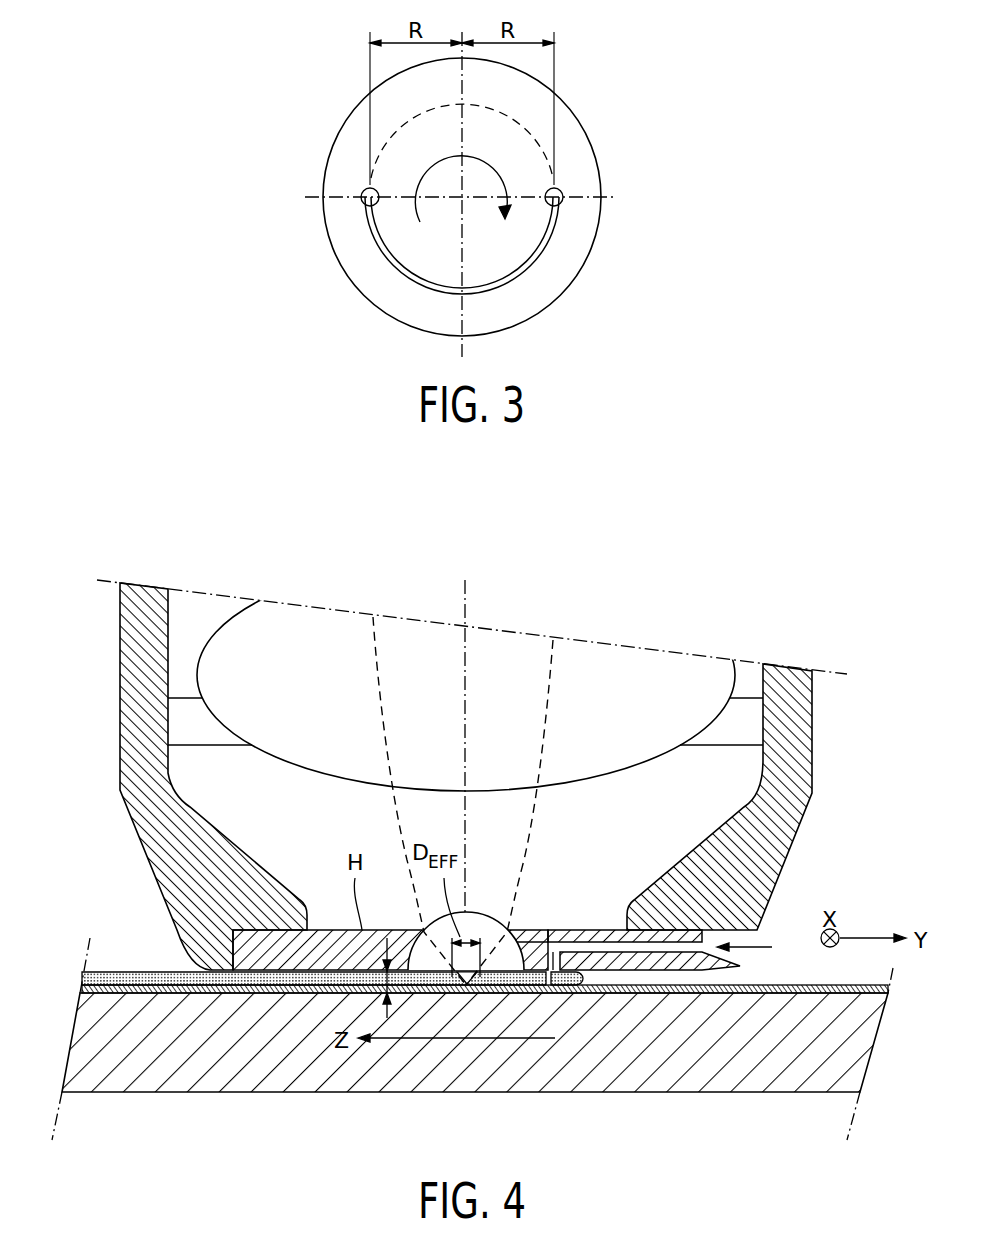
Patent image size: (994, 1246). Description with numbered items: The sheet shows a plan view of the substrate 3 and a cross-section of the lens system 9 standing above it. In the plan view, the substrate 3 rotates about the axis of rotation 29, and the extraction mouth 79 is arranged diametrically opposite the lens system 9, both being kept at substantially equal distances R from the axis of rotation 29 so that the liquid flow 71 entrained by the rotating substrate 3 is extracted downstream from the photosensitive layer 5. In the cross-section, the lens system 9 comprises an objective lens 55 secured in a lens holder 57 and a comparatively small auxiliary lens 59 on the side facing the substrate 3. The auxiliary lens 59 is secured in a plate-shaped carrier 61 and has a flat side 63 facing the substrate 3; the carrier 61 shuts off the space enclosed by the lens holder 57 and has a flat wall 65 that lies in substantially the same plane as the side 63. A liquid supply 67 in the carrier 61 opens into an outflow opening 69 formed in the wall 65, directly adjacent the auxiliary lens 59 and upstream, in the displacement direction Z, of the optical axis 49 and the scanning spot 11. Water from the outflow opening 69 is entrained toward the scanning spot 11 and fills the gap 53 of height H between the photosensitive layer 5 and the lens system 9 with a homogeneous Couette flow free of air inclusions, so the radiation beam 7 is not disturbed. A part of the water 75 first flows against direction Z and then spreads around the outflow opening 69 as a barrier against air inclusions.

In FIG. 3, the substrate 3 is at (370, 273).
In FIG. 4, the substrate 3 is at (666, 1057).
In FIG. 4, the photosensitive layer 5 is at (796, 985).
In FIG. 4, the radiation beam 7 is at (552, 703).
In FIG. 3, the lens system 9 is at (564, 193).
In FIG. 4, the lens system 9 is at (118, 866).
In FIG. 4, the scanning spot 11 is at (440, 982).
In FIG. 3, the axis of rotation 29 is at (462, 198).
In FIG. 4, the optical axis 49 is at (467, 681).
In FIG. 4, the gap 53 is at (425, 940).
In FIG. 4, the objective lens 55 is at (292, 747).
In FIG. 4, the lens holder 57 is at (137, 698).
In FIG. 4, the auxiliary lens 59 is at (487, 908).
In FIG. 4, the plate-shaped carrier 61 is at (328, 940).
In FIG. 4, the flat side 63 is at (537, 960).
In FIG. 4, the flat wall 65 is at (607, 960).
In FIG. 4, the liquid supply 67 is at (650, 940).
In FIG. 4, the outflow opening 69 is at (546, 975).
In FIG. 3, the liquid flow 71 is at (540, 256).
In FIG. 4, the part of the water 75 is at (570, 986).
In FIG. 3, the extraction mouth 79 is at (361, 193).